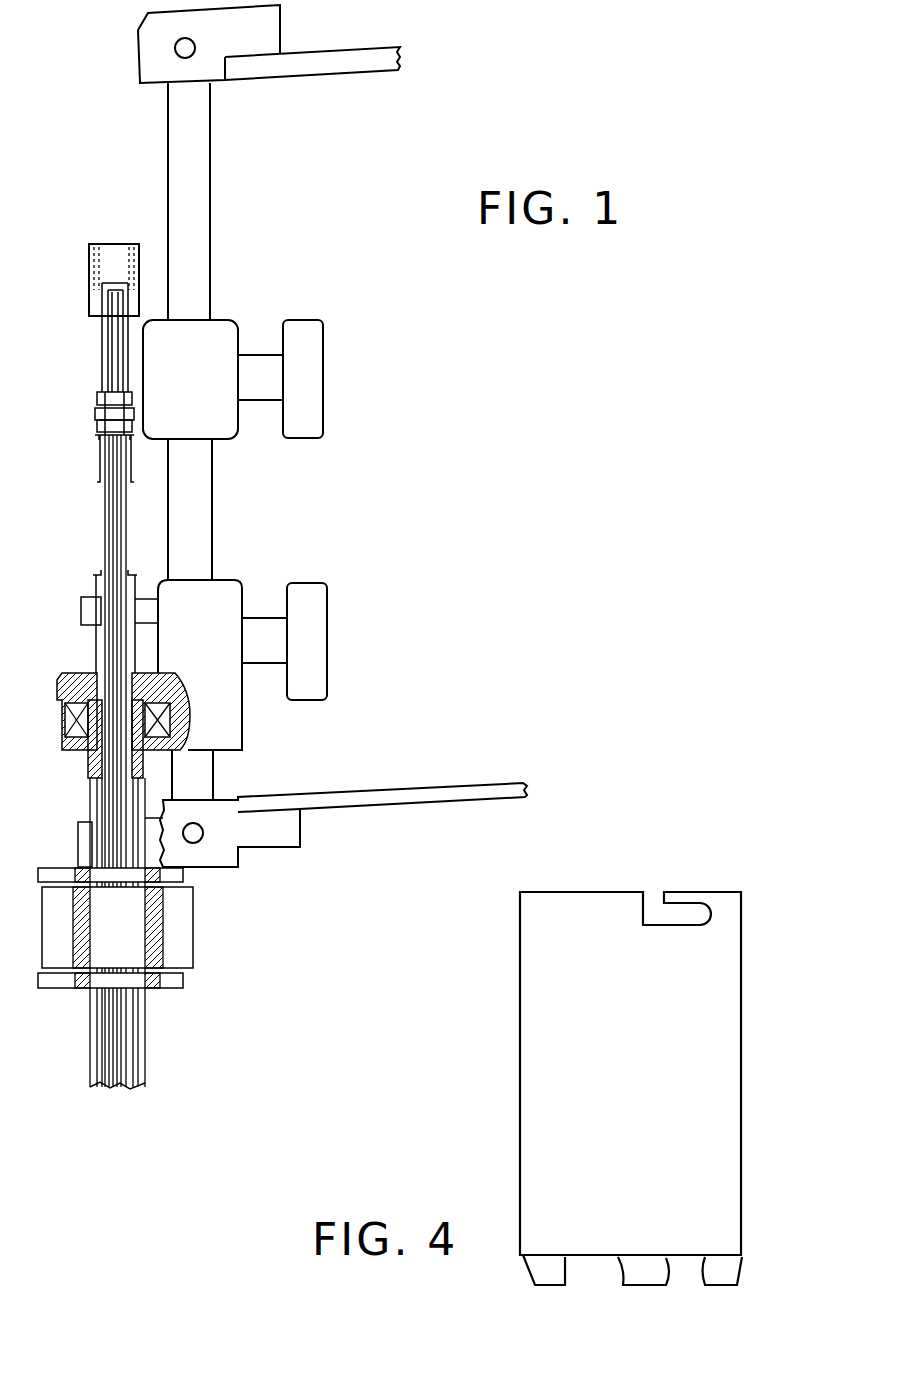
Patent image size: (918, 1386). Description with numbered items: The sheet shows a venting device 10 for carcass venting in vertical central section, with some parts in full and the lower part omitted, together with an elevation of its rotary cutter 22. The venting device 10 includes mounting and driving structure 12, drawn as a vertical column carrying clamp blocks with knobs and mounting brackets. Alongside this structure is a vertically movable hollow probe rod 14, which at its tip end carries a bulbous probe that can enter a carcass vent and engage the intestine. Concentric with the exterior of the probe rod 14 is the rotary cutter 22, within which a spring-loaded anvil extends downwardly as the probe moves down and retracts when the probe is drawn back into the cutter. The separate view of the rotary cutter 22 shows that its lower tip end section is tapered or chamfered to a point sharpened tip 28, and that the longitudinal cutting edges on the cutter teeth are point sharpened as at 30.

In FIG. 1, the venting device 10 is at (62, 256).
In FIG. 1, the mounting and driving structure 12 is at (238, 447).
In FIG. 1, the hollow probe rod 14 is at (100, 521).
In FIG. 4, the rotary cutter 22 is at (648, 1118).
In FIG. 4, the point sharpened tip 28 is at (727, 1287).
In FIG. 4, the point sharpened cutting edges 30 is at (667, 1277).